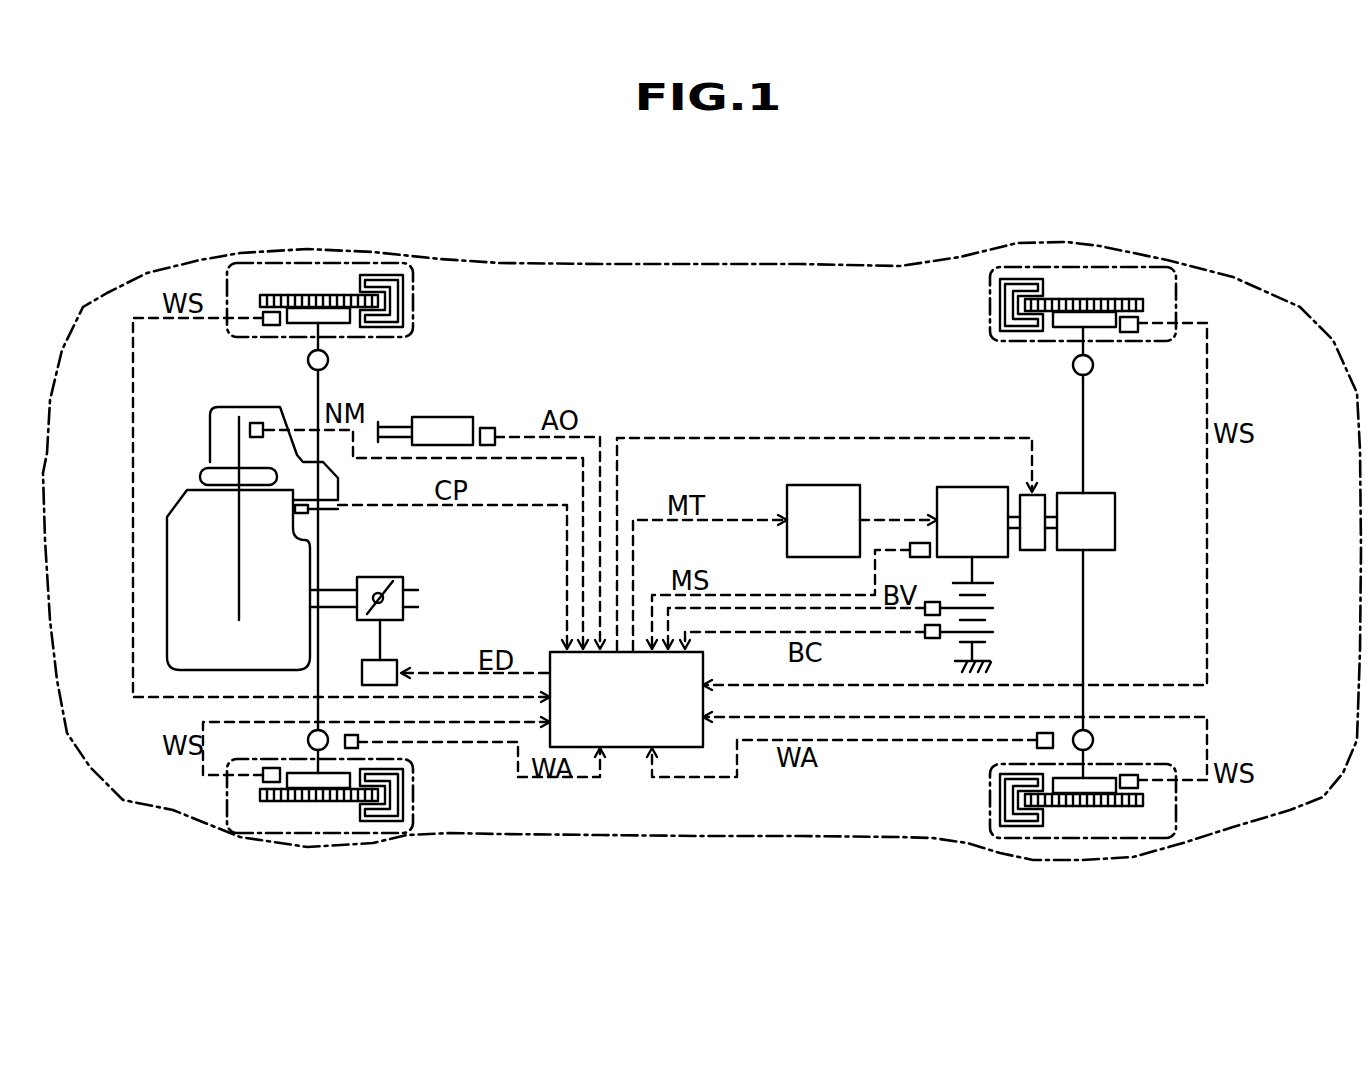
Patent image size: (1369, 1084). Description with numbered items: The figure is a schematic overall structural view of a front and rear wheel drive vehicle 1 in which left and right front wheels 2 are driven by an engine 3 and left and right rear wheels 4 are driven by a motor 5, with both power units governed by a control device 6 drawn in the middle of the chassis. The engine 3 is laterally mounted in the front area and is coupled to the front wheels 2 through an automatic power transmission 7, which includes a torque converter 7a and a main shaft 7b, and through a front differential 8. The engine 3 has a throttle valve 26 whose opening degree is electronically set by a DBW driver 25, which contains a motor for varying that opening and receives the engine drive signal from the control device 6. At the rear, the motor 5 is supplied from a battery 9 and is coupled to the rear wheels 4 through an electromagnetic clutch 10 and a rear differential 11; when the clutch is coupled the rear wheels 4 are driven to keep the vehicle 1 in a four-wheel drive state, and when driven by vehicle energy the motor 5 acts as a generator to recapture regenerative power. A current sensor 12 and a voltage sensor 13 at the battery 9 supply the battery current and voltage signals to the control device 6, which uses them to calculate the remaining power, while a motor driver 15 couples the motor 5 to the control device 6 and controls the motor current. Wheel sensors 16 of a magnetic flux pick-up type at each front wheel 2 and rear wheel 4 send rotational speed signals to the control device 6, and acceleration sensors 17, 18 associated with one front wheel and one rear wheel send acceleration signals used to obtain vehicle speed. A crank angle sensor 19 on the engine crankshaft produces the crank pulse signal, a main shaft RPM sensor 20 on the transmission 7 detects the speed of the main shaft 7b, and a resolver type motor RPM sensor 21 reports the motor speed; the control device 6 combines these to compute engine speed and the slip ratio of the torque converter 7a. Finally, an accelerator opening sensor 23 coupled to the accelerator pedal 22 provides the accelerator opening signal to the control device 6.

The front and rear wheel drive vehicle 1 is at (788, 219).
The front wheel 2 is at (303, 262).
The engine 3 is at (178, 613).
The rear wheel 4 is at (1080, 267).
The motor 5 is at (970, 482).
The control device 6 is at (703, 735).
The automatic power transmission 7 is at (206, 479).
The torque converter 7a is at (200, 476).
The main shaft 7b is at (187, 490).
The front differential 8 is at (320, 503).
The battery 9 is at (993, 632).
The electromagnetic clutch 10 is at (1032, 552).
The rear differential 11 is at (1090, 530).
The current sensor 12 is at (923, 638).
The voltage sensor 13 is at (923, 615).
The motor driver 15 is at (803, 487).
The wheel sensor 16 is at (263, 318).
The acceleration sensor 17 is at (360, 744).
The acceleration sensor 18 is at (1040, 748).
The crank angle sensor 19 is at (293, 513).
The main shaft RPM sensor 20 is at (243, 410).
The motor RPM sensor 21 is at (912, 544).
The accelerator pedal 22 is at (443, 417).
The accelerator opening sensor 23 is at (489, 428).
The DBW driver 25 is at (395, 658).
The throttle valve 26 is at (397, 578).